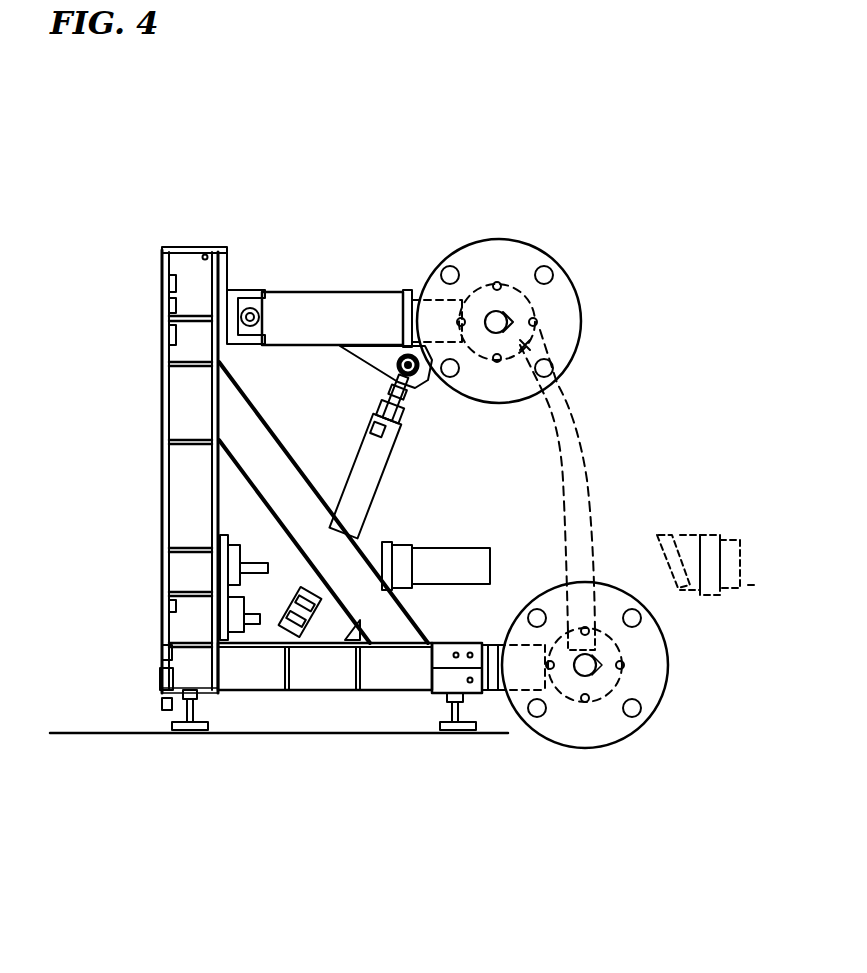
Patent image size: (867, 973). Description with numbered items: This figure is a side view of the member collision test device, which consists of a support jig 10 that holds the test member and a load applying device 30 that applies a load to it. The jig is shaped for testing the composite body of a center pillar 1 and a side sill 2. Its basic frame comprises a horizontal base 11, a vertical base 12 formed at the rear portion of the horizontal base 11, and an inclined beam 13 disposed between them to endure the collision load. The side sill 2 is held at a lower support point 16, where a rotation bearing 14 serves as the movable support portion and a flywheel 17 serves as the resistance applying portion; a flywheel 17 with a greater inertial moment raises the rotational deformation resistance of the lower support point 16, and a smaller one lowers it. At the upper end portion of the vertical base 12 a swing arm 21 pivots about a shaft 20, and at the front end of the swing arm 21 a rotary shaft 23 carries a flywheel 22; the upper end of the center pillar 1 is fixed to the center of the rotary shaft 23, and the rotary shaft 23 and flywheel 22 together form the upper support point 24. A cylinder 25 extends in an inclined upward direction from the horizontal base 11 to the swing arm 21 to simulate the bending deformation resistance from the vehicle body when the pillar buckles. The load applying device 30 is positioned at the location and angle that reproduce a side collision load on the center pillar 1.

The center pillar 1 is at (568, 445).
The side sill 2 is at (586, 662).
The support jig 10 is at (205, 238).
The horizontal base 11 is at (330, 672).
The vertical base 12 is at (177, 499).
The inclined beam 13 is at (268, 463).
The rotation bearing 14 is at (603, 627).
The lower support point 16 is at (602, 653).
The flywheel 17 is at (660, 667).
The shaft 20 is at (252, 307).
The swing arm 21 is at (356, 313).
The flywheel 22 is at (563, 315).
The rotary shaft 23 is at (497, 318).
The upper support point 24 is at (506, 312).
The cylinder 25 is at (365, 473).
The load applying device 30 is at (757, 542).